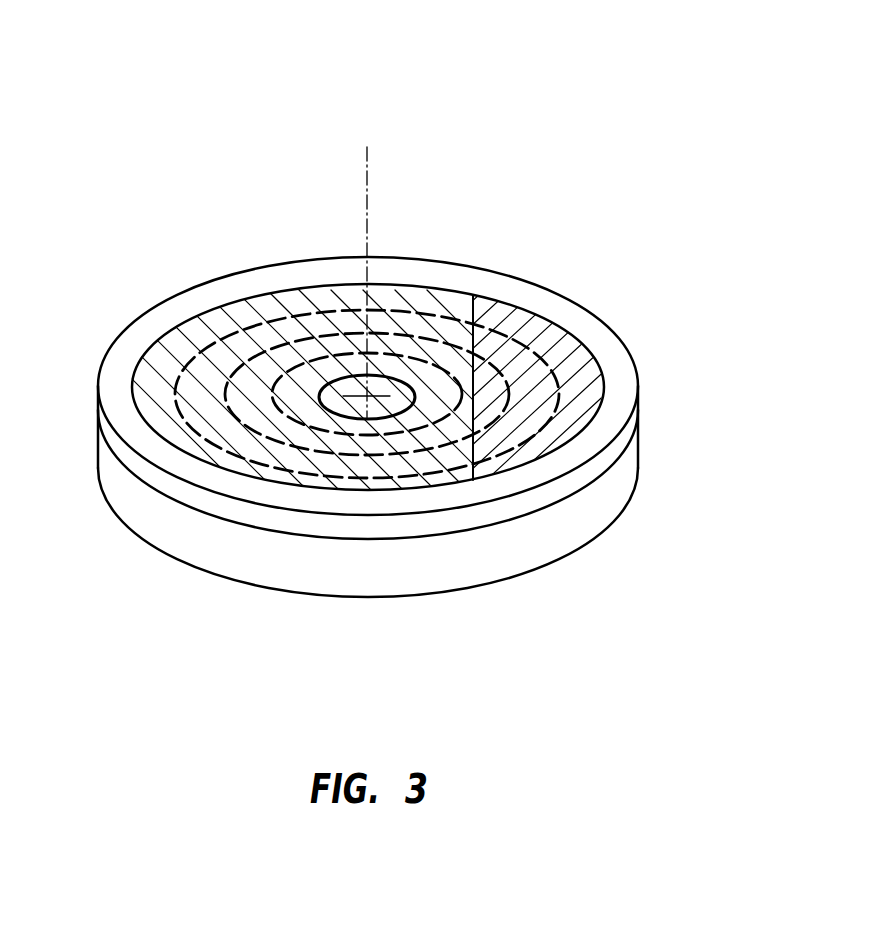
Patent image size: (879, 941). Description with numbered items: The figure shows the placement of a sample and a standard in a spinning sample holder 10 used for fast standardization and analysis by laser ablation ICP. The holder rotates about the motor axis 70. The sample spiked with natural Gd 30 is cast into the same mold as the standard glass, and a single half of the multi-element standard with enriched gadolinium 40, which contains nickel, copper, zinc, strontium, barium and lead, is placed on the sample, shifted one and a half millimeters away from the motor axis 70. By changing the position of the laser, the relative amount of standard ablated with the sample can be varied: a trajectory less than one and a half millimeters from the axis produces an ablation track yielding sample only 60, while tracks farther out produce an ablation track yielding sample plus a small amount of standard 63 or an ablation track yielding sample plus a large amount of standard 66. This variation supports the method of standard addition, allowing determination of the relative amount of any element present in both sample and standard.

The spinning sample holder 10 is at (156, 137).
The sample spiked with natural Gd 30 is at (495, 304).
The multi-element standard with enriched Gd (157) 40 is at (240, 300).
The ablation track yielding sample only 60 is at (485, 333).
The ablation track yielding sample plus a small amount of standard 63 is at (513, 368).
The ablation track yielding sample plus a large amount of standard 66 is at (563, 398).
The motor axis 70 is at (366, 350).